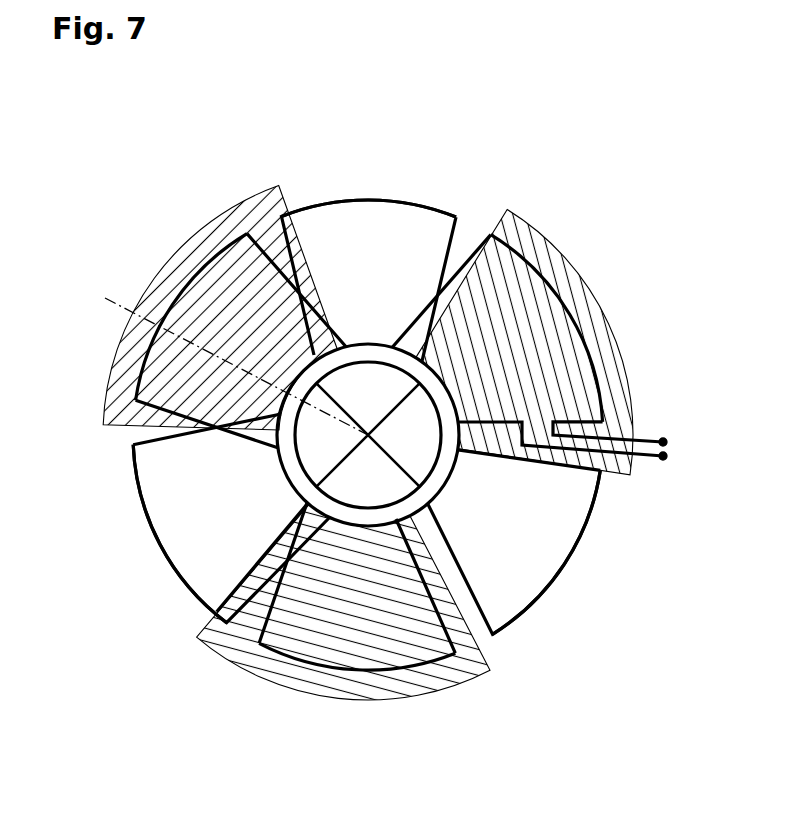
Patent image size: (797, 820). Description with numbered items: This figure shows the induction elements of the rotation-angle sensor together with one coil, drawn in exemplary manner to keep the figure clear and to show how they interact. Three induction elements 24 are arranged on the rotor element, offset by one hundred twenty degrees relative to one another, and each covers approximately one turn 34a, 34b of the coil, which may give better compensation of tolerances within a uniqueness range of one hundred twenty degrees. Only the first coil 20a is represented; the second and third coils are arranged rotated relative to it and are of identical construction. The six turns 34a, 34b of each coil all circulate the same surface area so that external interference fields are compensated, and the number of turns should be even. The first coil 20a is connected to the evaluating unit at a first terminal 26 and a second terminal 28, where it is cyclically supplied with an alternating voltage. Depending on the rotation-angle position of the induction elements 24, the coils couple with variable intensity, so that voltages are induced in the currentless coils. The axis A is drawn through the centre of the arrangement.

The first coil 20a is at (438, 188).
The induction element 24 is at (193, 256).
The turn 34a is at (362, 206).
The turn 34b is at (160, 375).
The first terminal 26 is at (667, 442).
The second terminal 28 is at (667, 456).
The section axis A is at (226, 360).